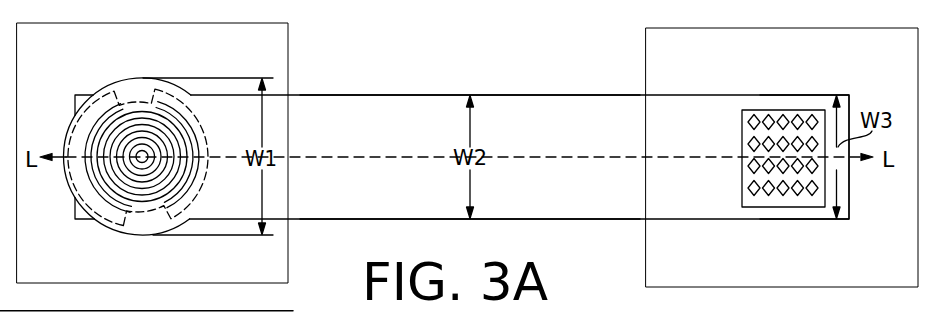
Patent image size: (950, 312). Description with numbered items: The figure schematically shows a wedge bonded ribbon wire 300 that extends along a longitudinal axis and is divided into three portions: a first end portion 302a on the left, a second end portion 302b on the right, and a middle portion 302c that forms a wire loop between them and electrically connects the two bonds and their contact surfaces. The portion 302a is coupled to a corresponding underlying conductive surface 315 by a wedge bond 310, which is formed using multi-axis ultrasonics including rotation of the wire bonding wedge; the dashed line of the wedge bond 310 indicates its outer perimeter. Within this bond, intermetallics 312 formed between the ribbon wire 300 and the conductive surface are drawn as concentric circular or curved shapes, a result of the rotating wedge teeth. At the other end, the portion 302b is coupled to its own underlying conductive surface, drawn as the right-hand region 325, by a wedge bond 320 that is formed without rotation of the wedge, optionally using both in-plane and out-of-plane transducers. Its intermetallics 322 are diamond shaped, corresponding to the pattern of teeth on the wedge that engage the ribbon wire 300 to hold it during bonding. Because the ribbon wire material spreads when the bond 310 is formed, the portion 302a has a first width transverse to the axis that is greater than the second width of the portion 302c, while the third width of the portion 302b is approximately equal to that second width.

The ribbon wire 300 is at (570, 82).
The portion 302a is at (133, 78).
The portion 302b is at (787, 95).
The portion 302c is at (512, 95).
The wedge bond 310 is at (141, 214).
The intermetallics 312 is at (98, 120).
The conductive surface 315 is at (270, 276).
The wedge bond 320 is at (785, 208).
The intermetallics 322 is at (742, 193).
The second region 325 is at (903, 277).